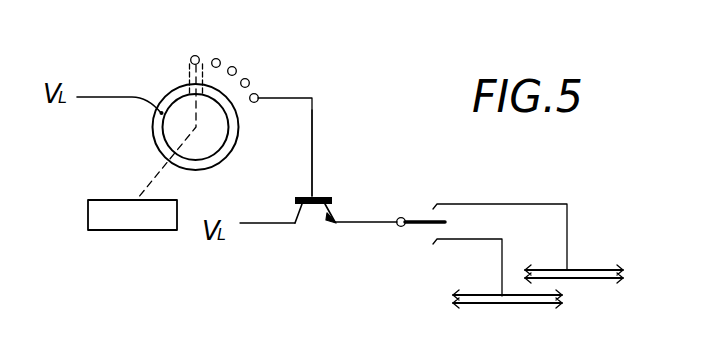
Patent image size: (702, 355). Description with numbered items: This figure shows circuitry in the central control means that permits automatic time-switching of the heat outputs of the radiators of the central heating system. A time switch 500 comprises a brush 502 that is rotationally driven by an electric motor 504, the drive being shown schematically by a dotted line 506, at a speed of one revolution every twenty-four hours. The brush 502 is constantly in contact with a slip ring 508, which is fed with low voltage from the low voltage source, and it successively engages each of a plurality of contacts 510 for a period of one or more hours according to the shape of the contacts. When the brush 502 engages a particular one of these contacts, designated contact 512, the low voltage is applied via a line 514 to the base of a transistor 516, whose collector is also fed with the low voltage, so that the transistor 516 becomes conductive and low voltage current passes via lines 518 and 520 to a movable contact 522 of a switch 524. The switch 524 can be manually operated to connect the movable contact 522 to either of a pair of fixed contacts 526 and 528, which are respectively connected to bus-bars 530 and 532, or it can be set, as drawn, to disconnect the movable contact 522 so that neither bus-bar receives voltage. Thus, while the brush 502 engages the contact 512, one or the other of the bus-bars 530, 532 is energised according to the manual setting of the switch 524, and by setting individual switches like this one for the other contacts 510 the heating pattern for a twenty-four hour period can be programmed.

The time switch 500 is at (145, 142).
The brush 502 is at (188, 71).
The electric motor 504 is at (125, 231).
The dotted line 506 is at (148, 180).
The slip ring 508 is at (226, 148).
The contacts 510 is at (248, 80).
The contact 512 is at (258, 94).
The line 514 is at (313, 130).
The transistor 516 is at (341, 202).
The line 518 is at (266, 226).
The line 520 is at (348, 226).
The movable contact 522 is at (419, 228).
The switch 524 is at (431, 195).
The fixed contact 526 is at (437, 208).
The fixed contact 528 is at (437, 240).
The bus-bar 530 is at (597, 267).
The bus-bar 532 is at (472, 298).